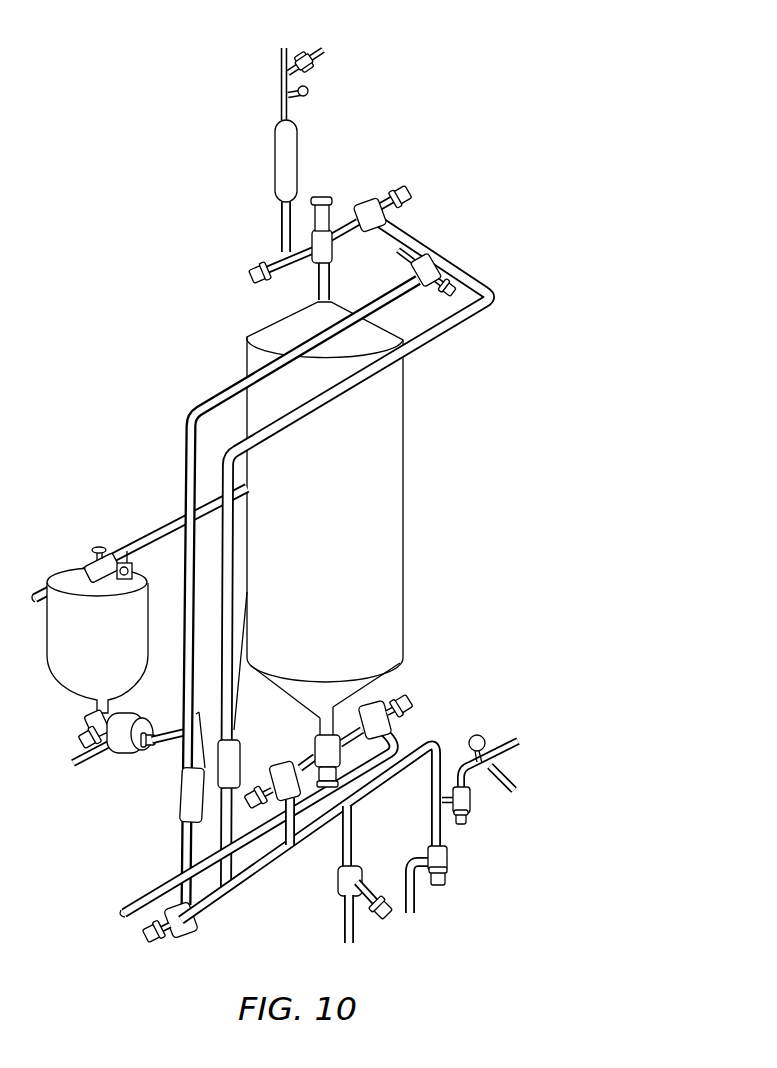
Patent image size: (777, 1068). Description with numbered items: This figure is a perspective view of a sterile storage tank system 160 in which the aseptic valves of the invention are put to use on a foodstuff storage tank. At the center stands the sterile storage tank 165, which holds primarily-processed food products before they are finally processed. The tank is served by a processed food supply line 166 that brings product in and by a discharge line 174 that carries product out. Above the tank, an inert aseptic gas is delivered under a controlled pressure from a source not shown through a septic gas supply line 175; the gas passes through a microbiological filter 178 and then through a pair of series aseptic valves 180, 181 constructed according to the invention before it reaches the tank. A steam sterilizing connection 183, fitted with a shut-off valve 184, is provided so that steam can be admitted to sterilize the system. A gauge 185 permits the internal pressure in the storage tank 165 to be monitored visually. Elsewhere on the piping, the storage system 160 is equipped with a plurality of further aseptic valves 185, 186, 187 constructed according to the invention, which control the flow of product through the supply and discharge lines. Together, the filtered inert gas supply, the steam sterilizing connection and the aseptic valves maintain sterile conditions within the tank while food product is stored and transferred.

The sterile storage tank system 160 is at (203, 347).
The sterile storage tank 165 is at (337, 504).
The processed food supply line 166 is at (185, 760).
The discharge line 174 is at (140, 906).
The septic gas supply line 175 is at (281, 85).
The microbiological filter 178 is at (298, 153).
The aseptic valve 180 is at (292, 264).
The aseptic valve 181 is at (331, 229).
The steam sterilizing connection 183 is at (323, 64).
The shut-off valve 184 is at (305, 54).
The gauge 185 is at (305, 95).
The aseptic valve 186 is at (280, 767).
The aseptic valve 187 is at (393, 706).